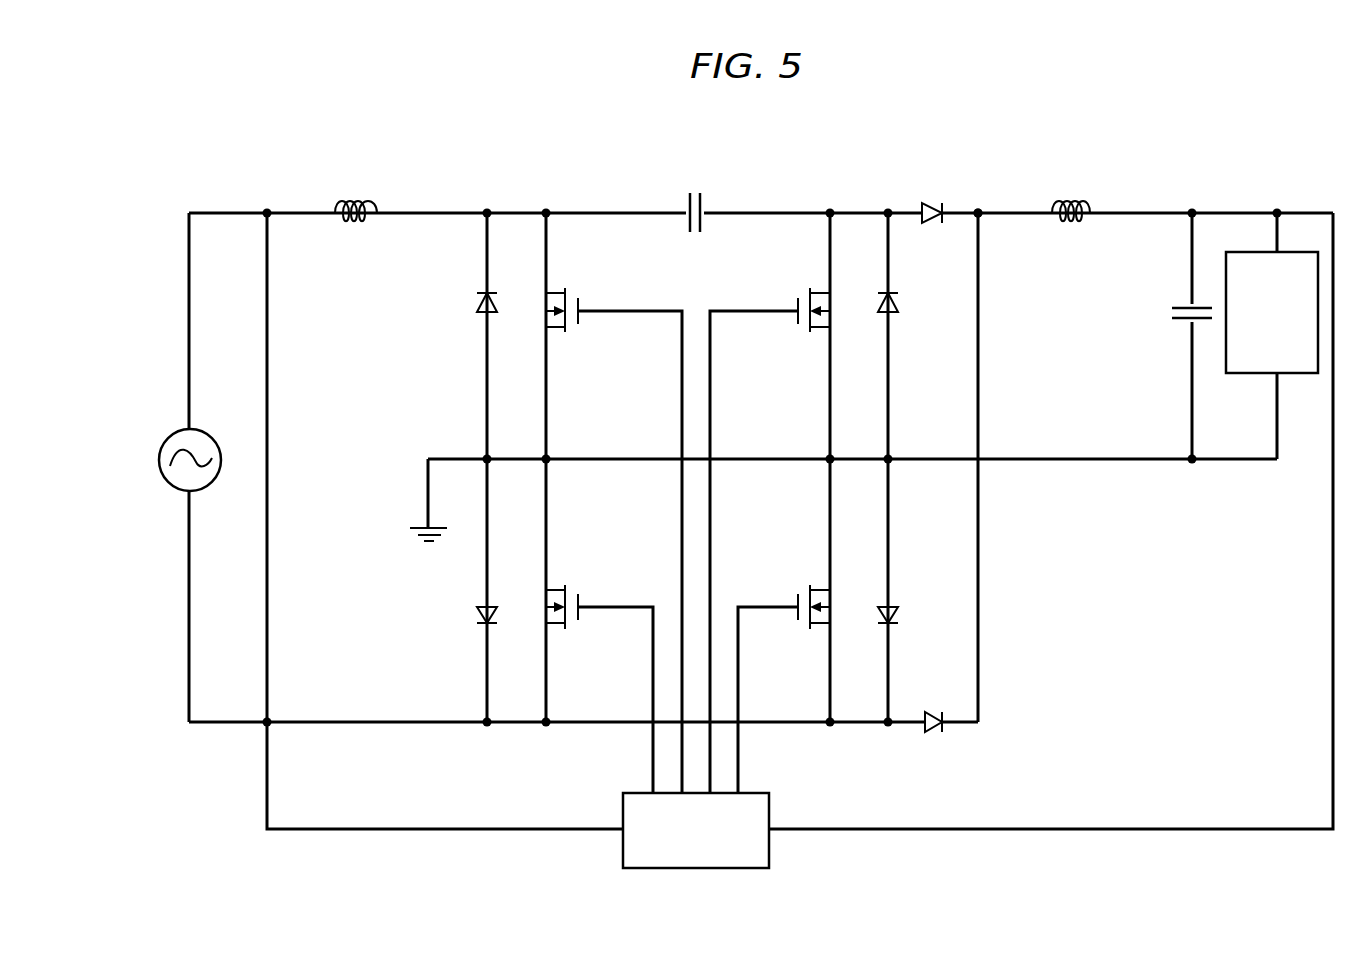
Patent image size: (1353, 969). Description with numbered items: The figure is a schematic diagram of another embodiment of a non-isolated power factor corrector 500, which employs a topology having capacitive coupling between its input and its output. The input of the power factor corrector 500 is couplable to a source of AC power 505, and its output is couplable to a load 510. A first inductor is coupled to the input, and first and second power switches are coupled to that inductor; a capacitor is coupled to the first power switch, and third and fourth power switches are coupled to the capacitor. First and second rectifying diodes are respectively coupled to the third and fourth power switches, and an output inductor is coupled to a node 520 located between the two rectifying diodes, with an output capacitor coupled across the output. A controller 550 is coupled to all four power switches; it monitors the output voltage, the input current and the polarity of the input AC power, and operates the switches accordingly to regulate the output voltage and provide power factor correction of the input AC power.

The non-isolated power factor corrector 500 is at (552, 152).
The source of AC power 505 is at (162, 444).
The load 510 is at (1297, 374).
The node 520 is at (980, 215).
The controller 550 is at (732, 869).